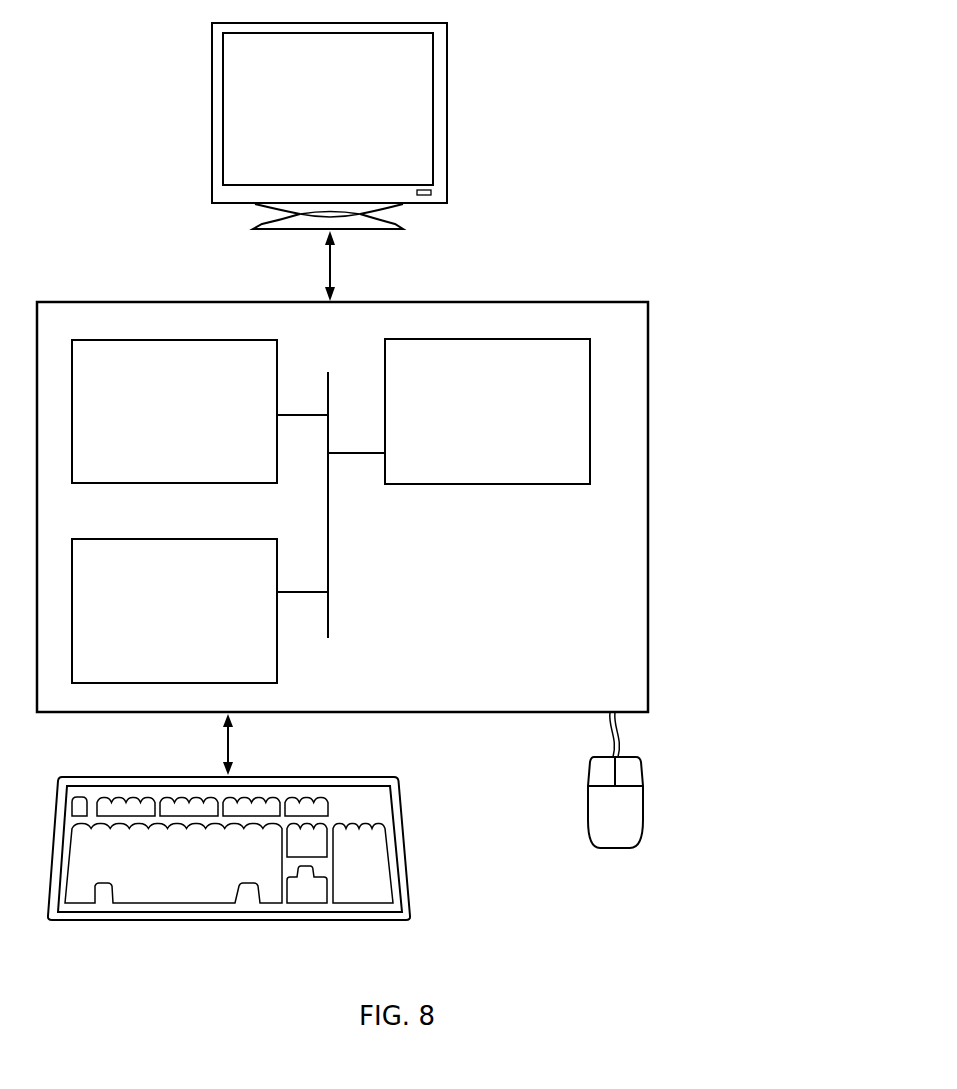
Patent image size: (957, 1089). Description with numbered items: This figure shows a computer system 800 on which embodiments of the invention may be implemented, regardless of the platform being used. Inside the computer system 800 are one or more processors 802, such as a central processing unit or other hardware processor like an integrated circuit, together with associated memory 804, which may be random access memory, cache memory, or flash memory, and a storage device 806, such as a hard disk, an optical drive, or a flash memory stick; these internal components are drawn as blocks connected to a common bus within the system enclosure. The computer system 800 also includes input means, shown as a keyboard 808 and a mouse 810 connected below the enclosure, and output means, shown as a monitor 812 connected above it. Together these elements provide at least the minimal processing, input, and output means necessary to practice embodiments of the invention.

The computer system 800 is at (699, 306).
The processor 802 is at (468, 411).
The memory 804 is at (153, 412).
The storage device 806 is at (153, 609).
The keyboard 808 is at (153, 859).
The mouse 810 is at (652, 859).
The monitor 812 is at (311, 119).